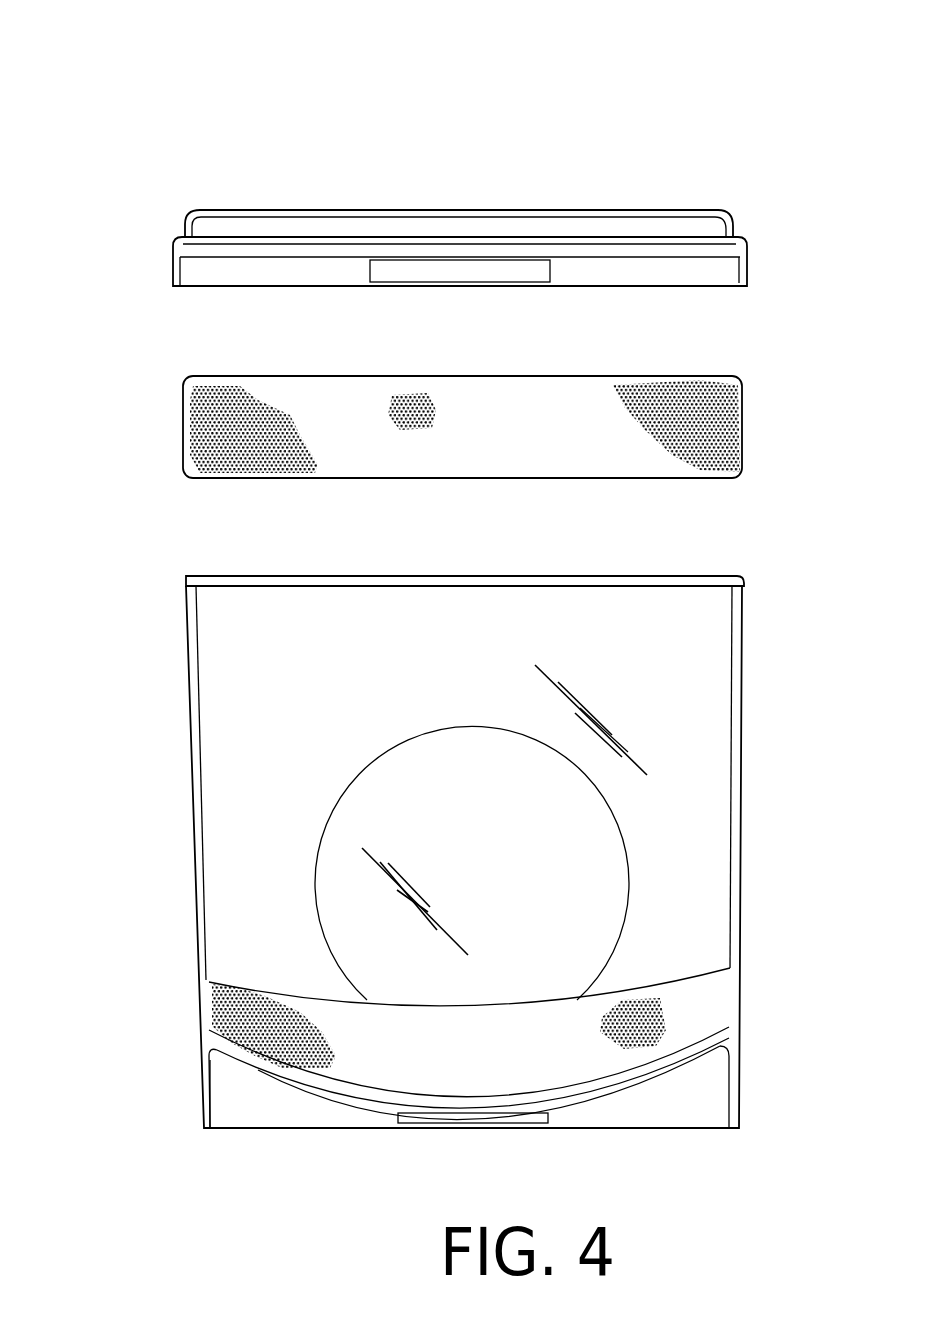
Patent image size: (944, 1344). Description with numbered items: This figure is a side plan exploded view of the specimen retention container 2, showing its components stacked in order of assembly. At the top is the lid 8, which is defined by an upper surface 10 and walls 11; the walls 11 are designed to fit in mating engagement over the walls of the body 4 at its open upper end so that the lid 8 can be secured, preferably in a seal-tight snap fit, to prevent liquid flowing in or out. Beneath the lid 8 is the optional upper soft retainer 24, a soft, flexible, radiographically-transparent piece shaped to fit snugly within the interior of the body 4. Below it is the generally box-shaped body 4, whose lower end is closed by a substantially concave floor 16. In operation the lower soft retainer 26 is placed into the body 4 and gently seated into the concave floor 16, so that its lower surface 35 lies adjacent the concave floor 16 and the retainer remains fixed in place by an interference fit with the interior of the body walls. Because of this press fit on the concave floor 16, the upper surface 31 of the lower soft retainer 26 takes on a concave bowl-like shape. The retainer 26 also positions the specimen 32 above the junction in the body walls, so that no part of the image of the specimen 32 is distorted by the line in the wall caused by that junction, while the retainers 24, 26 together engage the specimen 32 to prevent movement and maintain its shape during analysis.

The specimen retention container 2 is at (110, 74).
The body 4 is at (217, 810).
The lid 8 is at (664, 218).
The upper surface 10 is at (252, 210).
The walls 11 is at (172, 276).
The concave floor 16 is at (252, 1068).
The upper soft retainer 24 is at (742, 432).
The lower soft retainer 26 is at (710, 1022).
The upper surface 31 is at (690, 970).
The specimen 32 is at (593, 833).
The lower surface 35 is at (360, 1092).